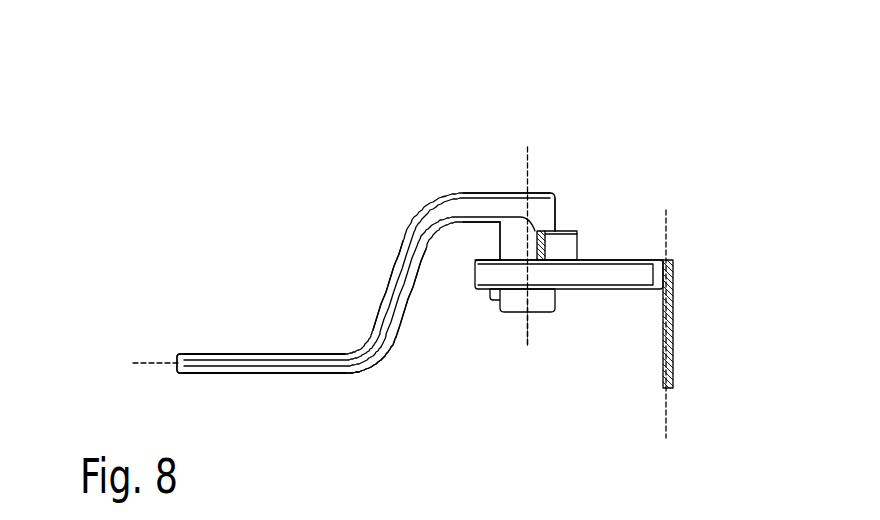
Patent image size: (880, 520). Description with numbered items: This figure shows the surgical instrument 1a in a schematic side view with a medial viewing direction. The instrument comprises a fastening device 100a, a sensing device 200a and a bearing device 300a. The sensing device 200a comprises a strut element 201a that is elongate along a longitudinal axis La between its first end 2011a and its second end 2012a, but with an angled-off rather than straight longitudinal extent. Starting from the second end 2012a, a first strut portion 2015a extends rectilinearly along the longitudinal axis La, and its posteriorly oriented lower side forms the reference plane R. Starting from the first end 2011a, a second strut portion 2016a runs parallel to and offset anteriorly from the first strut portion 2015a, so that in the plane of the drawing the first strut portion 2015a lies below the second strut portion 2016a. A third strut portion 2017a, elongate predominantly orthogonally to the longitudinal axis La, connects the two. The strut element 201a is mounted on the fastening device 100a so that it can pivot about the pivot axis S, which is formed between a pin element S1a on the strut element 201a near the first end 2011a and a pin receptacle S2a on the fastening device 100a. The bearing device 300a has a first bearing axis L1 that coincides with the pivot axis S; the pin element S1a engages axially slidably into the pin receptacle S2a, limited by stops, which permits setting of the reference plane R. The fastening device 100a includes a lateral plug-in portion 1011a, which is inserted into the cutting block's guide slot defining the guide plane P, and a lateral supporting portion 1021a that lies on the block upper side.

The surgical instrument 1a is at (607, 92).
The fastening device 100a is at (626, 272).
The lateral plug-in portion 1011a is at (675, 333).
The lateral supporting portion 1021a is at (652, 260).
The sensing device 200a is at (378, 205).
The strut element 201a is at (388, 305).
The first end 2011a is at (542, 193).
The second end 2012a is at (180, 354).
The first strut portion 2015a is at (277, 380).
The second strut portion 2016a is at (505, 193).
The third strut portion 2017a is at (405, 333).
The bearing device 300a is at (571, 197).
The pivot axis S is at (527, 147).
The pin element S1a is at (553, 300).
The pin receptacle S2a is at (483, 250).
The first bearing axis L1 is at (528, 343).
The longitudinal axis La is at (150, 363).
The reference plane R is at (275, 382).
The guide plane P is at (664, 410).